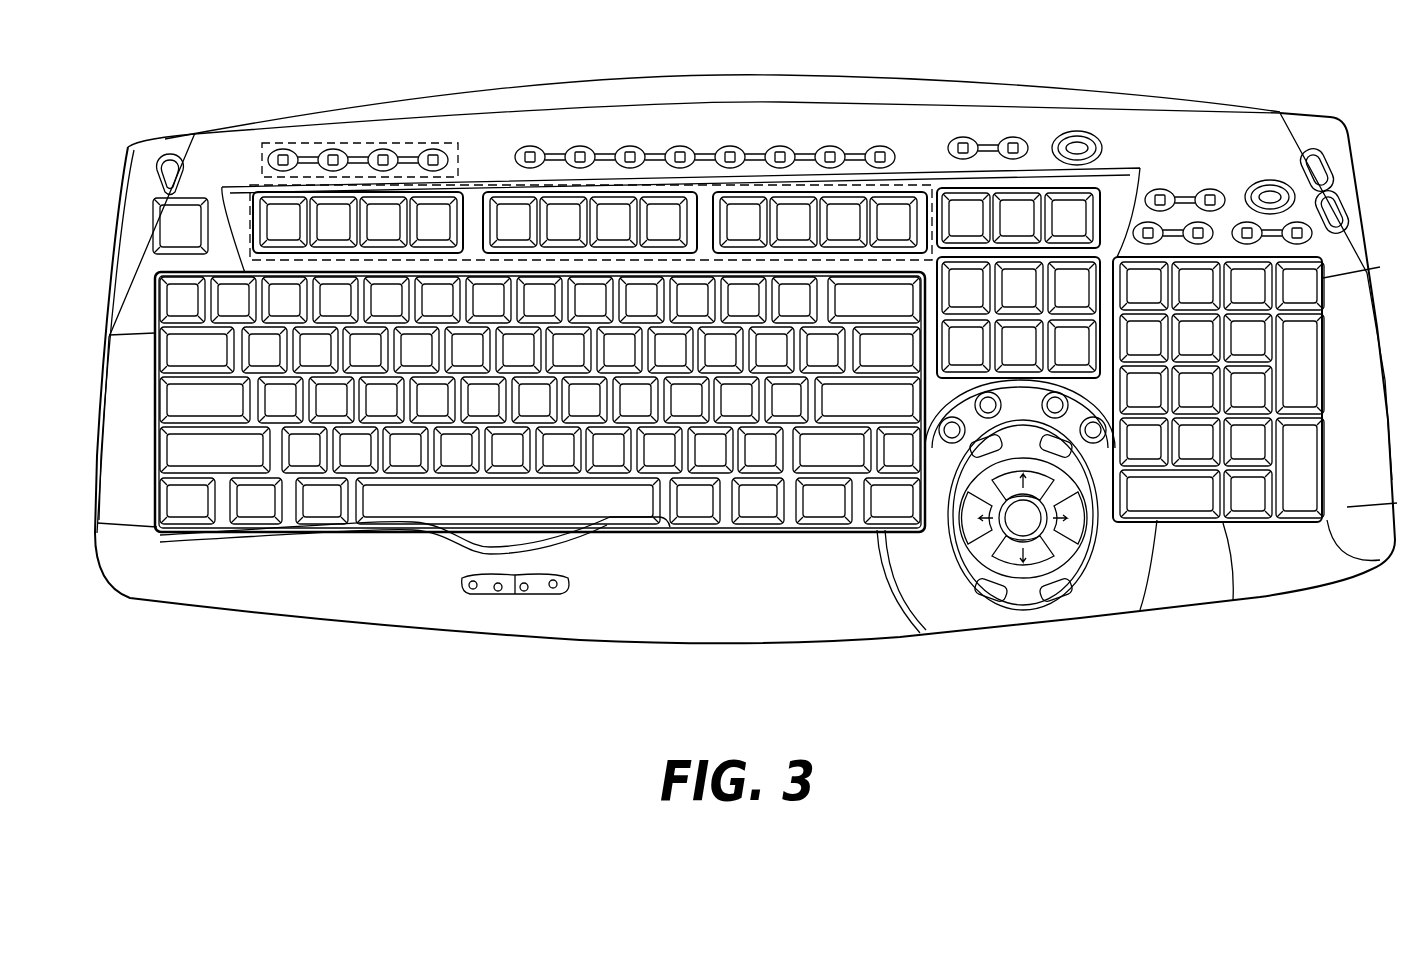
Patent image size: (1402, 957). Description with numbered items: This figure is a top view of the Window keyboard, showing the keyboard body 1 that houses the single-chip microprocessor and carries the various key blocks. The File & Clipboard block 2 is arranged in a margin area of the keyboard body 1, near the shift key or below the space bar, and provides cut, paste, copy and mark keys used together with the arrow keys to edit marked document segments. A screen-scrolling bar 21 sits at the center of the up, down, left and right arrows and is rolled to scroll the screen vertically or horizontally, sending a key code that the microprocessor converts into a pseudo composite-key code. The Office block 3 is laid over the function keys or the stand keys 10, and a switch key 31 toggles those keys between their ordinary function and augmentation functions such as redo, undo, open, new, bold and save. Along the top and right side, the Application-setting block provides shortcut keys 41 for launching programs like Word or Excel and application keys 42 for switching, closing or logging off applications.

The keyboard body 1 is at (370, 605).
The File & Clipboard block 2 is at (1051, 539).
The Office block 3 is at (260, 181).
The stand keys 10 is at (633, 532).
The screen-scrolling bar 21 is at (1027, 523).
The switch key 31 is at (168, 156).
The shortcut key 41 is at (357, 146).
The application key 42 is at (1263, 180).